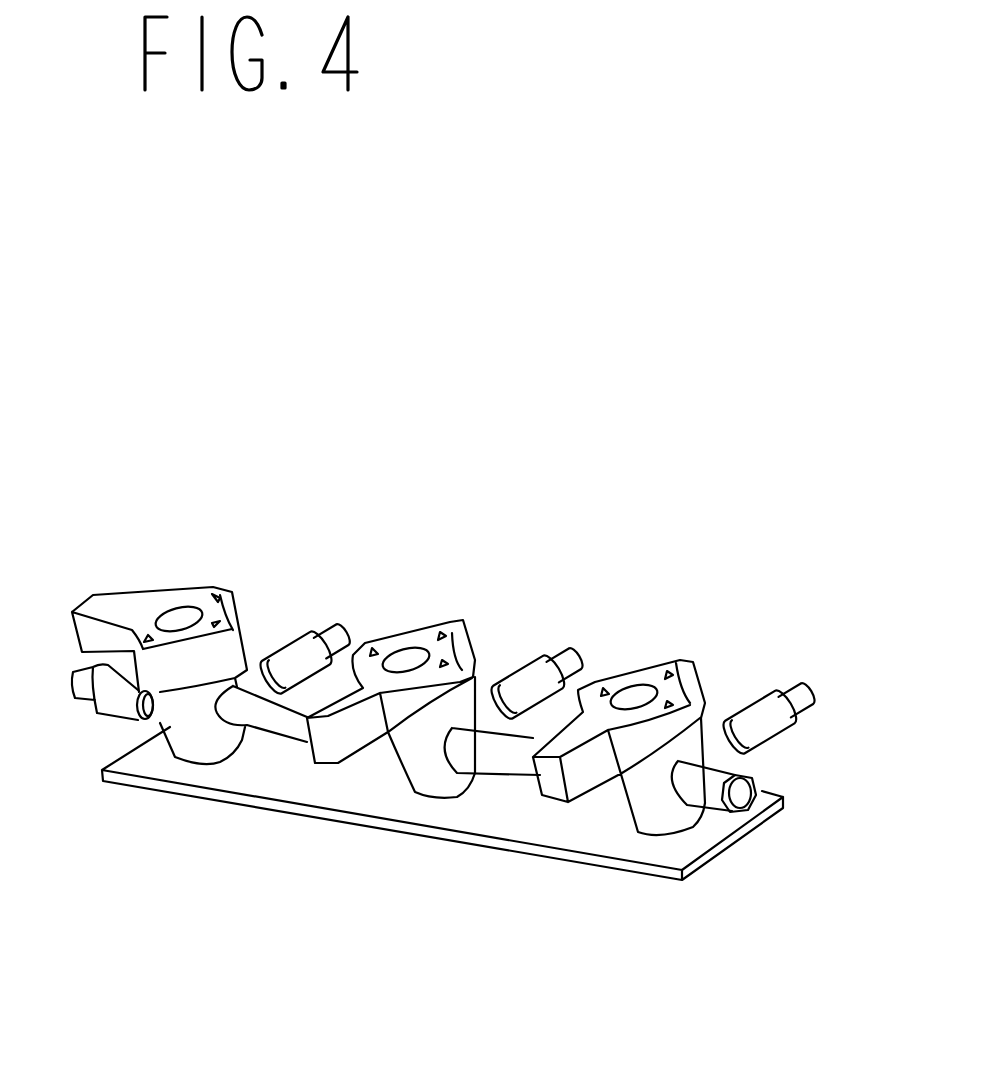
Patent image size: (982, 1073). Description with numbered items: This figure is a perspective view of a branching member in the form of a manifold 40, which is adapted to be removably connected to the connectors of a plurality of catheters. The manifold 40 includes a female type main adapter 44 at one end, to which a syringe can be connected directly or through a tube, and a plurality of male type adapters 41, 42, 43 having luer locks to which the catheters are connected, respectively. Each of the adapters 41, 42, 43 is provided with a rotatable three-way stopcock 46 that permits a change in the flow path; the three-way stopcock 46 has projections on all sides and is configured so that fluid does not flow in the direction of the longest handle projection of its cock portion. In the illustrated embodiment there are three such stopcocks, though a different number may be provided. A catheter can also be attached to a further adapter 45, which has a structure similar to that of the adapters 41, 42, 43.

The manifold 40 is at (348, 835).
The male type adapter 41 is at (810, 688).
The male type adapter 42 is at (580, 655).
The male type adapter 43 is at (345, 617).
The female type main adapter 44 is at (730, 770).
The adapter 45 is at (76, 700).
The three-way stopcock 46 is at (143, 600).